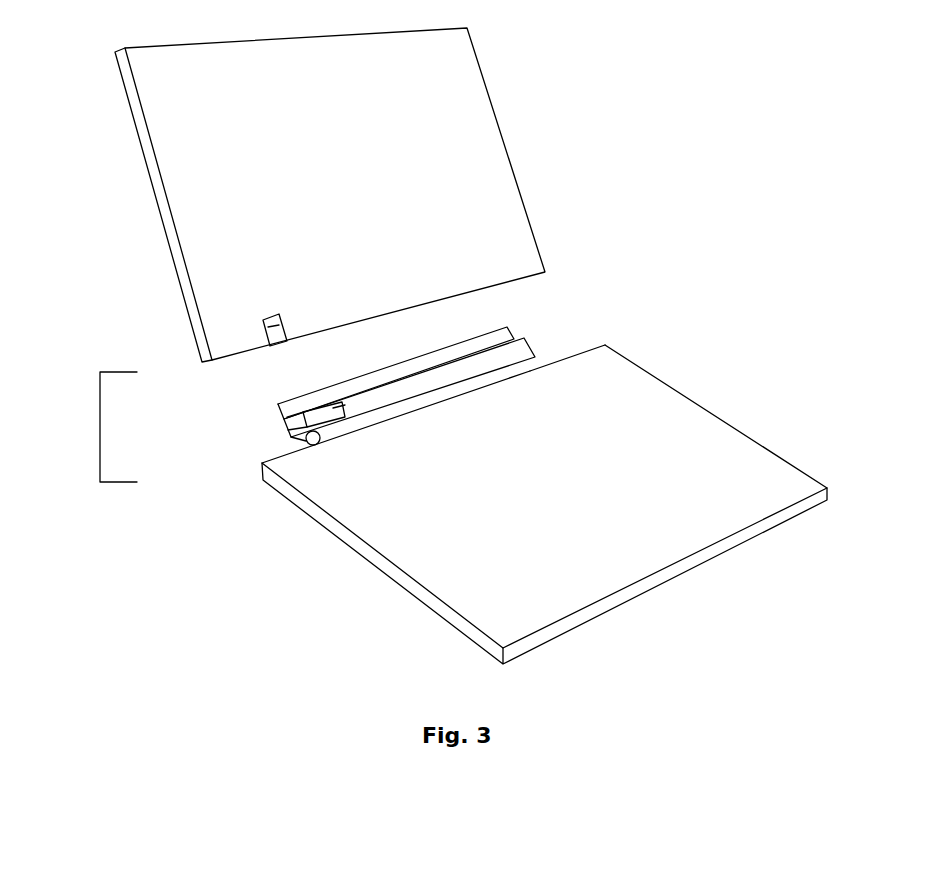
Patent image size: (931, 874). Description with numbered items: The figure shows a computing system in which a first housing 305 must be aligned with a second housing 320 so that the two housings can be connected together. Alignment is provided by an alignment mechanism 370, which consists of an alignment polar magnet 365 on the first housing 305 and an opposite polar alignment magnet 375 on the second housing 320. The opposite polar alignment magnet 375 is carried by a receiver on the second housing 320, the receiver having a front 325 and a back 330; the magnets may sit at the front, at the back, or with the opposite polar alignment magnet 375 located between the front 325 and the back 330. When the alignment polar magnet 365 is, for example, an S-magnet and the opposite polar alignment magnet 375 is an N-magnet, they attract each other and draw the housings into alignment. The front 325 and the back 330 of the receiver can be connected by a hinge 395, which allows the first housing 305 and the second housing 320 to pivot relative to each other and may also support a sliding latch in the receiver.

The first housing 305 is at (197, 198).
The second housing 320 is at (410, 518).
The front of the receiver 325 is at (513, 355).
The back of the receiver 330 is at (497, 337).
The alignment polar magnet 365 is at (268, 327).
The alignment mechanism 370 is at (93, 422).
The opposite polar alignment magnet 375 is at (297, 422).
The hinge 395 is at (533, 362).